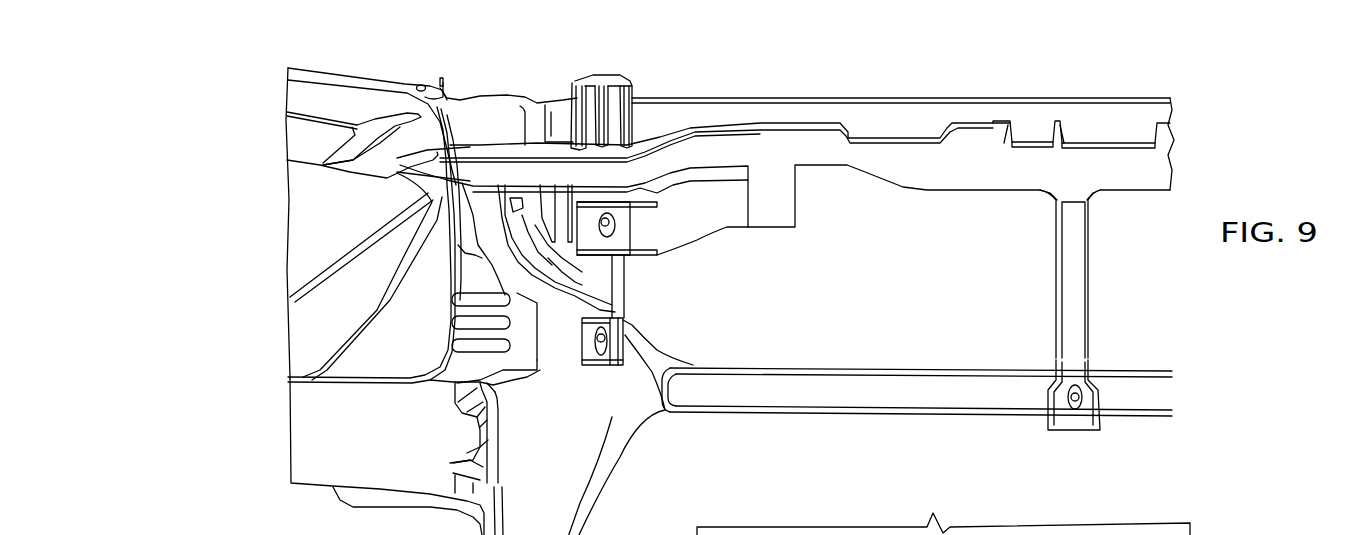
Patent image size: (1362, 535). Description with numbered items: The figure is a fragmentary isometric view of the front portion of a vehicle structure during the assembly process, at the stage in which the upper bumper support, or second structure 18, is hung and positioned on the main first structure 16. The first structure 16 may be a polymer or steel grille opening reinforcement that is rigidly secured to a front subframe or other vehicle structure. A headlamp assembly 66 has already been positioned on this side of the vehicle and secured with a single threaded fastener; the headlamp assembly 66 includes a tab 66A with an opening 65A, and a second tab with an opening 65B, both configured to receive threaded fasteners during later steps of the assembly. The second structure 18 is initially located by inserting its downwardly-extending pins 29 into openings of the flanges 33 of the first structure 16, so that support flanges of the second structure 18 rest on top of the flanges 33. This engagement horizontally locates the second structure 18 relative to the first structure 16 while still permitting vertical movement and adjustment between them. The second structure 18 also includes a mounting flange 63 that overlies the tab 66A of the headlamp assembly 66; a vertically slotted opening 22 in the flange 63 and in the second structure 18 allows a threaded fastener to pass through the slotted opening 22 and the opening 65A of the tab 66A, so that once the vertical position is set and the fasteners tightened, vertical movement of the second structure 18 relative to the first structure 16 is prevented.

The first structure 16 is at (820, 367).
The second structure 18 is at (1090, 290).
The vertically slotted opening 22 is at (607, 330).
The downwardly-extending pin 29 is at (565, 262).
The flange 33 is at (530, 195).
The mounting flange 63 is at (597, 360).
The opening 65A is at (603, 358).
The opening 65B is at (423, 87).
The headlamp assembly 66 is at (300, 233).
The tab 66A is at (627, 333).